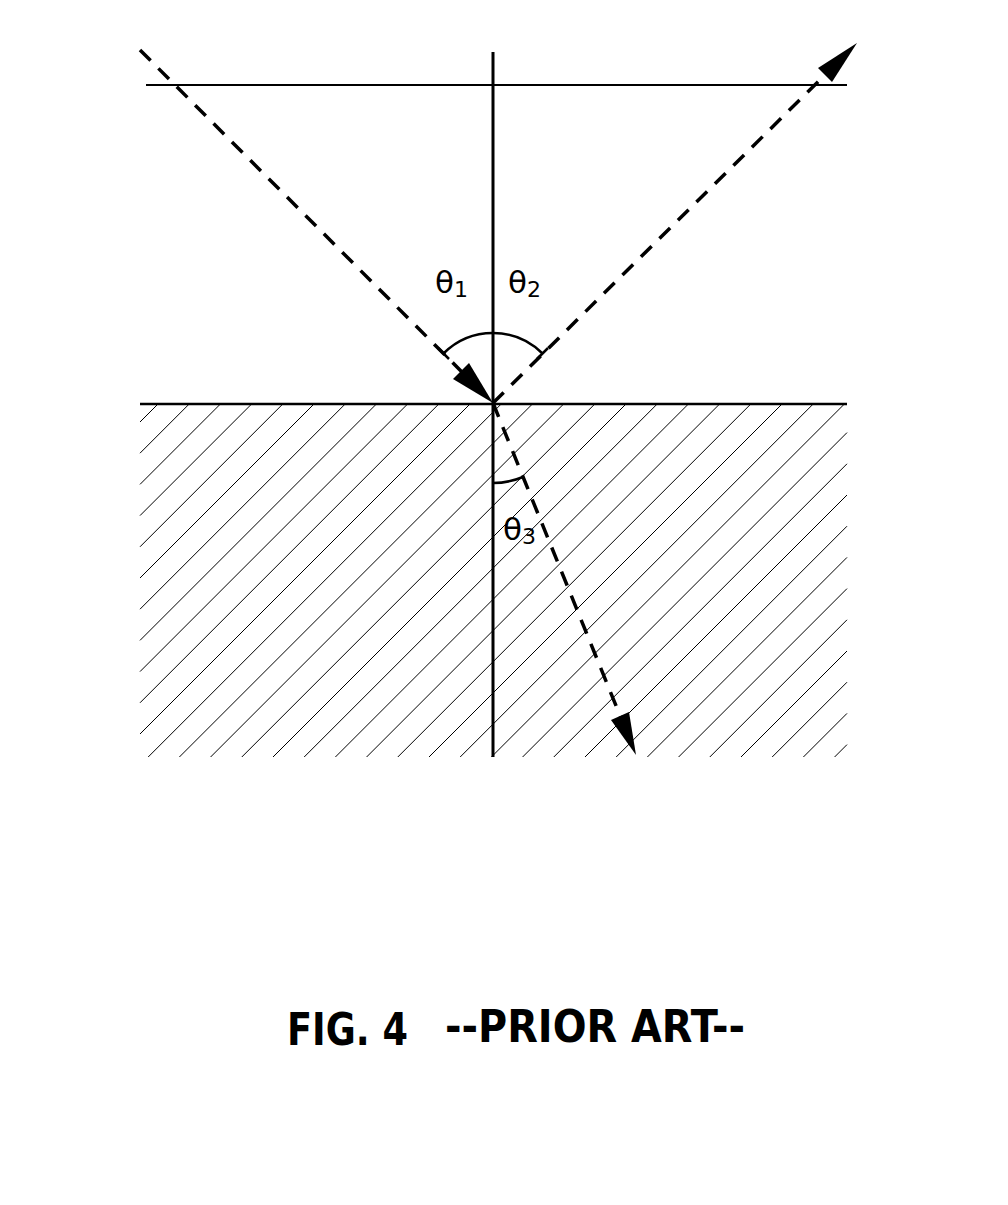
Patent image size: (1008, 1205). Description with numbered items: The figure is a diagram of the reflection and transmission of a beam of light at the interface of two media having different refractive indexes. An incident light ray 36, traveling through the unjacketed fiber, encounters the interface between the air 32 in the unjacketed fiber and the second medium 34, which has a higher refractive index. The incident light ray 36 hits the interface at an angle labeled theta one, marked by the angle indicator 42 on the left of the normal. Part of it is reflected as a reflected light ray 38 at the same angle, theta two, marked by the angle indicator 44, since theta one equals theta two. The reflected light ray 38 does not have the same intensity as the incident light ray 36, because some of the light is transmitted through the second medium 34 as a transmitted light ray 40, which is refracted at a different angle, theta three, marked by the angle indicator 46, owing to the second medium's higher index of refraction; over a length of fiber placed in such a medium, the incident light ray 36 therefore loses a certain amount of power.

The air 32 is at (193, 283).
The second medium 34 is at (318, 572).
The incident light ray 36 is at (250, 158).
The reflected light ray 38 is at (742, 163).
The transmitted light ray 40 is at (603, 682).
The angle of incidence θ1 42 is at (427, 333).
The angle of reflection θ2 44 is at (533, 340).
The angle of refraction θ3 46 is at (510, 485).